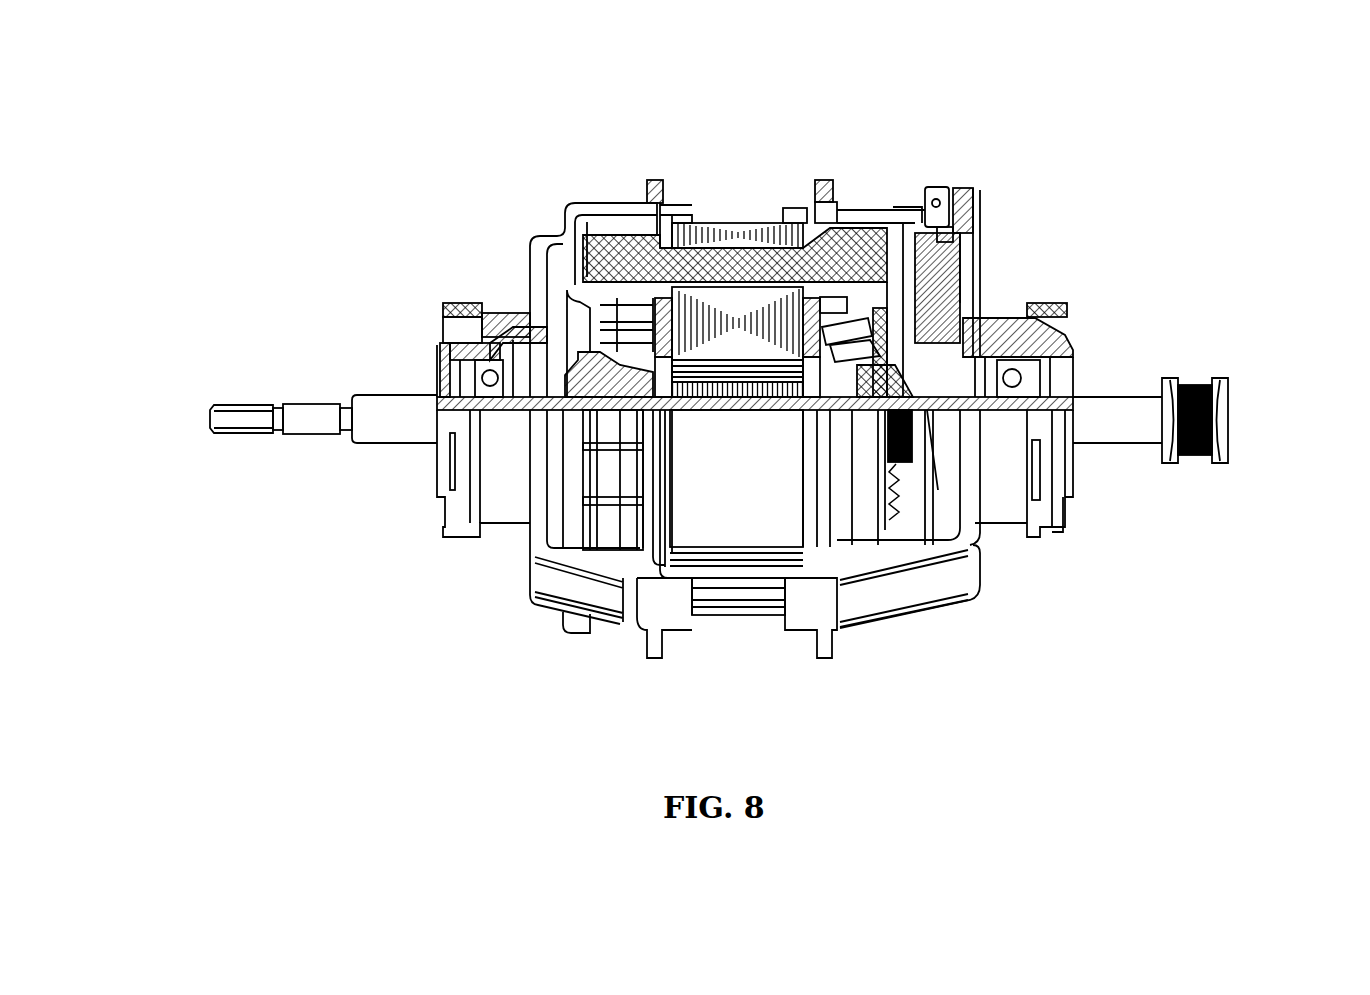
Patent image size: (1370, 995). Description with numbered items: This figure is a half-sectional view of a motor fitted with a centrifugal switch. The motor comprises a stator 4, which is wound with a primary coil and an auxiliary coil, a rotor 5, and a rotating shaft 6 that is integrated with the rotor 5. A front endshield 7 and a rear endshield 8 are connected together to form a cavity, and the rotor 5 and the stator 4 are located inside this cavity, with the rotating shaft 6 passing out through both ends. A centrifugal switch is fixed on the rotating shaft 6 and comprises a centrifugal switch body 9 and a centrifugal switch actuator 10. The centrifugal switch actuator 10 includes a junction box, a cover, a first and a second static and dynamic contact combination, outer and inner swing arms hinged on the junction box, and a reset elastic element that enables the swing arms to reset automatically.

The stator 4 is at (742, 233).
The rotor 5 is at (718, 327).
The rotating shaft 6 is at (1105, 407).
The front endshield 7 is at (643, 657).
The rear endshield 8 is at (833, 632).
The centrifugal switch body 9 is at (903, 460).
The centrifugal switch actuator 10 is at (978, 233).